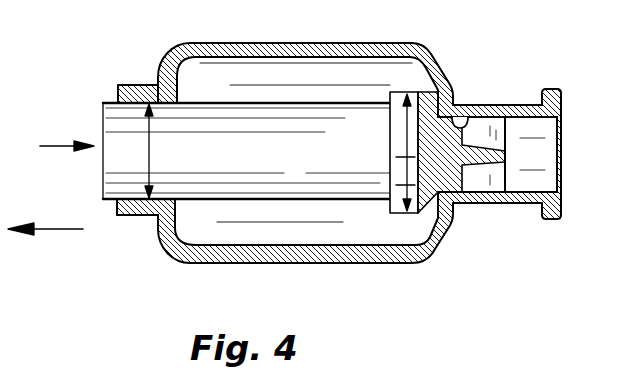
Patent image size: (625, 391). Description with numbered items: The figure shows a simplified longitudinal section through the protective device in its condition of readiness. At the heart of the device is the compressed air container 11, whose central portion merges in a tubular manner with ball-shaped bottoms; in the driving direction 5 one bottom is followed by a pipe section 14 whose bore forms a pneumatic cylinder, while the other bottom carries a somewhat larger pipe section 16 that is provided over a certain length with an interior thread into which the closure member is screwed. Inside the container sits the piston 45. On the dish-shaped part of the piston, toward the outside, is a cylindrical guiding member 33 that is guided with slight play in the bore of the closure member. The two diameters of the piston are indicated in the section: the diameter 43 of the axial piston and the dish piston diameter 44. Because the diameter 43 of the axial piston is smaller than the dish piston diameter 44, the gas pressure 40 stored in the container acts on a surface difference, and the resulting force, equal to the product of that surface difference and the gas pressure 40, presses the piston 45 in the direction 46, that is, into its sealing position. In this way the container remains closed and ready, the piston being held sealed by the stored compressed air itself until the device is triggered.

The driving direction 5 is at (48, 233).
The compressed air container 11 is at (393, 263).
The pipe section 14 is at (146, 200).
The pipe section 16 is at (517, 107).
The cylindrical guiding member 33 is at (467, 118).
The gas pressure 40 is at (268, 232).
The diameter of the axial piston 43 is at (148, 162).
The dish piston diameter 44 is at (405, 165).
The piston 45 is at (304, 172).
The direction 46 is at (52, 144).